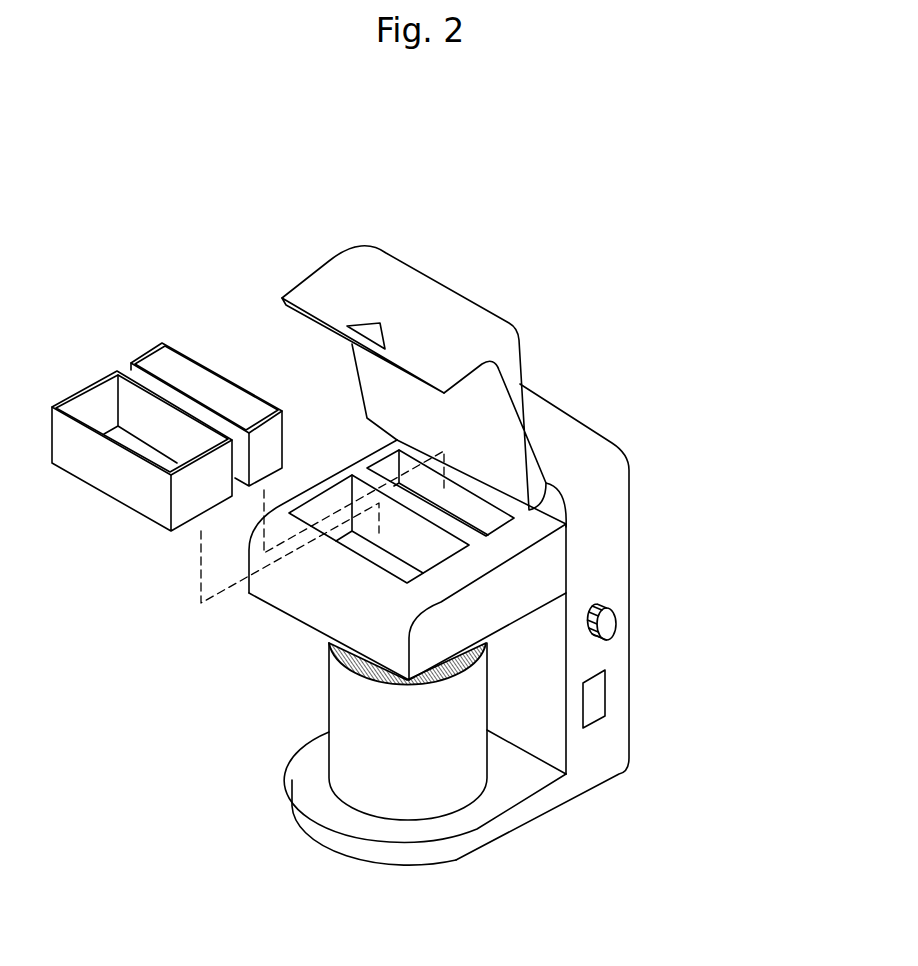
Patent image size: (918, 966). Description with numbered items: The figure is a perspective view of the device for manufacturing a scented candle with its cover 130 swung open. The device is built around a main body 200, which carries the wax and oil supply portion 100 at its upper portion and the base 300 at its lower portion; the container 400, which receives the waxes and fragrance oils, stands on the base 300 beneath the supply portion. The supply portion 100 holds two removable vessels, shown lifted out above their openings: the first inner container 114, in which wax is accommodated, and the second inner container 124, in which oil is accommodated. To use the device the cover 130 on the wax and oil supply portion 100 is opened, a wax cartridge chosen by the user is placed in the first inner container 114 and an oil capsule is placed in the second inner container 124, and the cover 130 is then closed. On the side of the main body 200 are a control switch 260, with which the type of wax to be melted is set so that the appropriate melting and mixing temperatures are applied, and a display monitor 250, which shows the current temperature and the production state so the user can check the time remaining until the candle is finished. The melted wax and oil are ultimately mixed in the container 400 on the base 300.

The wax and oil supply portion 100 is at (276, 627).
The first inner container 114 is at (111, 487).
The second inner container 124 is at (197, 357).
The cover 130 is at (363, 250).
The main body 200 is at (650, 671).
The display monitor 250 is at (600, 702).
The control switch 260 is at (617, 621).
The base 300 is at (393, 855).
The container 400 is at (433, 790).